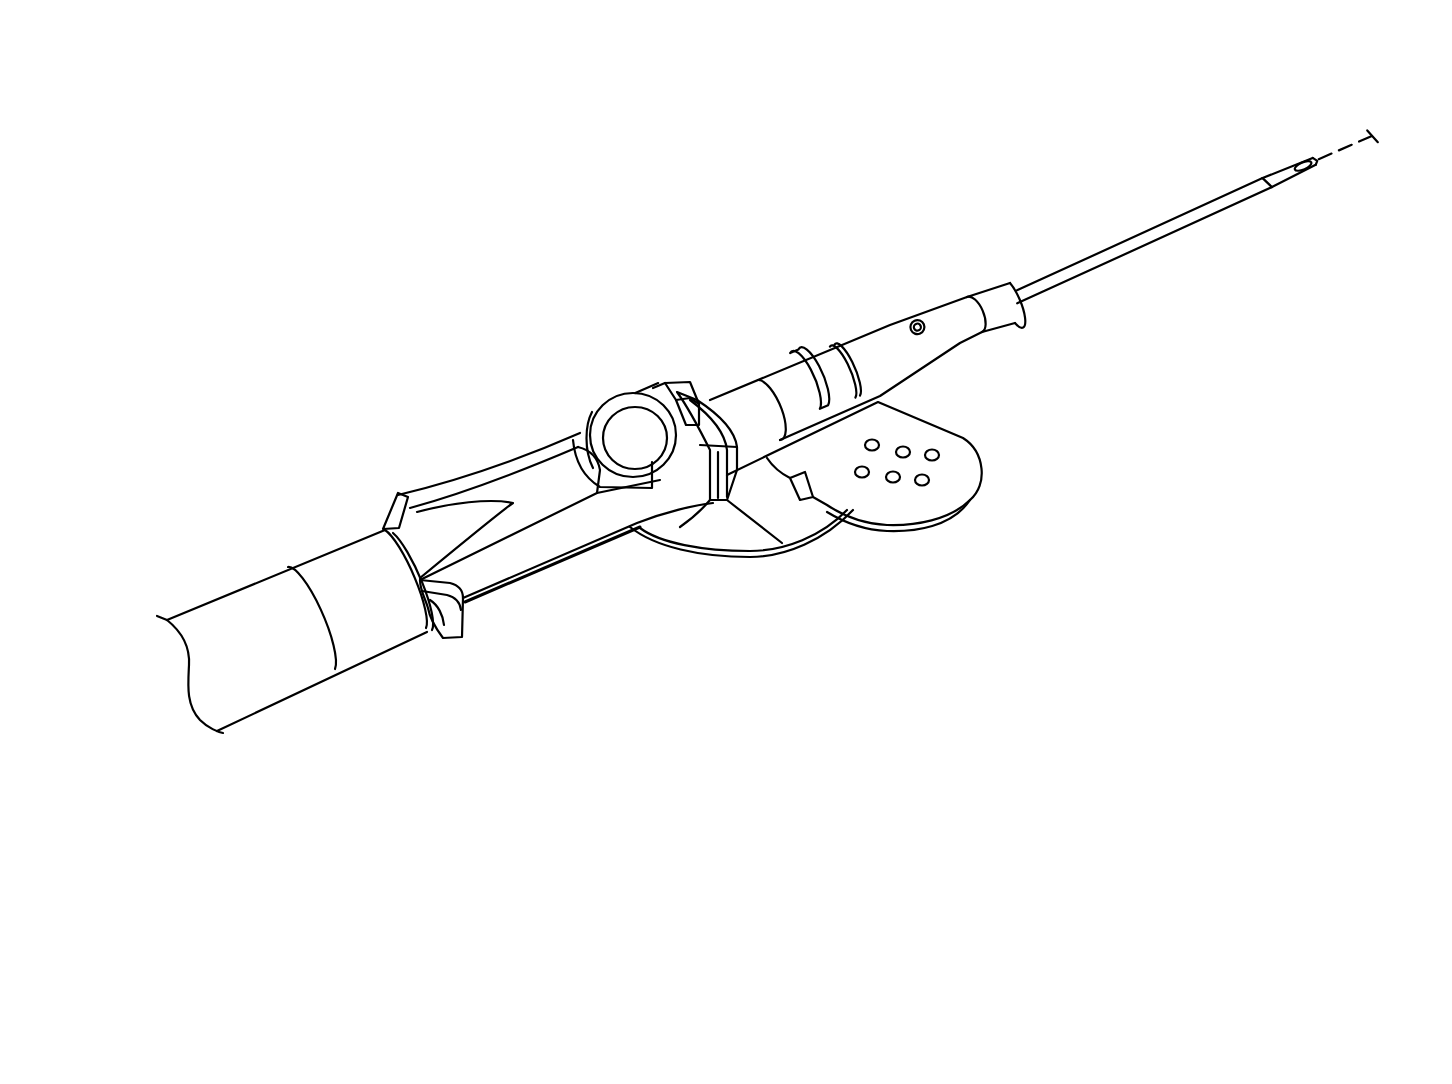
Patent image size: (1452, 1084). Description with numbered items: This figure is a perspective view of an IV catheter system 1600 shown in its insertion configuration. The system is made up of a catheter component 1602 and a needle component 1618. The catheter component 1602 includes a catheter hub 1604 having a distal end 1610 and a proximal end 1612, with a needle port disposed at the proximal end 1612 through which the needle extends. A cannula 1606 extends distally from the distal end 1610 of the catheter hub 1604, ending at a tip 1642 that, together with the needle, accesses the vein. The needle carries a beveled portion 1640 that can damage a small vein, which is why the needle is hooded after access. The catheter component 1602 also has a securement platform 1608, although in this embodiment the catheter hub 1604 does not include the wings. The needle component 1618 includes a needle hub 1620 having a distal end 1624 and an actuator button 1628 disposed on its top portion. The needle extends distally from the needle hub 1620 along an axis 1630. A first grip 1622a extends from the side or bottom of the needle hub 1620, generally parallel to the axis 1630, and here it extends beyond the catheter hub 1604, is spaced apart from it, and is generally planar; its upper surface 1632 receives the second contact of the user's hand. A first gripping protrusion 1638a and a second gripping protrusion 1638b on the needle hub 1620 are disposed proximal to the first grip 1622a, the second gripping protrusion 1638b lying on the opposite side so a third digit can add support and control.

The IV catheter system 1600 is at (418, 236).
The needle component 1618 is at (278, 515).
The needle hub 1620 is at (258, 702).
The first gripping protrusion 1638a is at (483, 623).
The second gripping protrusion 1638b is at (418, 508).
The actuator button 1628 is at (623, 435).
The proximal end 1612 is at (699, 408).
The catheter component 1602 is at (930, 285).
The catheter hub 1604 is at (867, 352).
The distal end 1610 is at (997, 283).
The cannula 1606 is at (1193, 206).
The tip 1642 is at (1275, 187).
The beveled portion 1640 is at (1307, 160).
The axis 1630 is at (1365, 143).
The securement platform 1608 is at (952, 386).
The upper surface 1632 is at (790, 530).
The first grip 1622a is at (722, 542).
The distal end 1624 is at (672, 548).